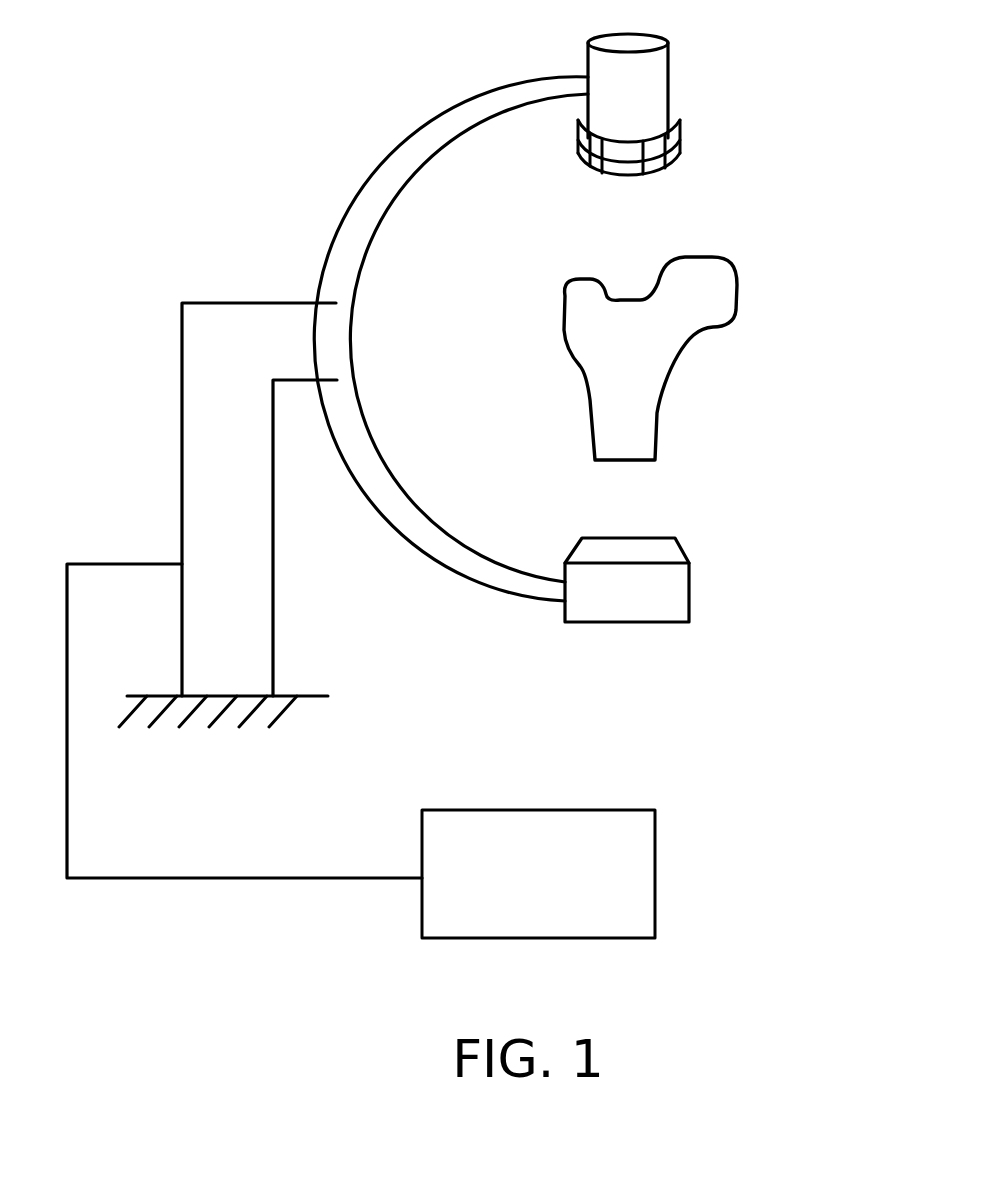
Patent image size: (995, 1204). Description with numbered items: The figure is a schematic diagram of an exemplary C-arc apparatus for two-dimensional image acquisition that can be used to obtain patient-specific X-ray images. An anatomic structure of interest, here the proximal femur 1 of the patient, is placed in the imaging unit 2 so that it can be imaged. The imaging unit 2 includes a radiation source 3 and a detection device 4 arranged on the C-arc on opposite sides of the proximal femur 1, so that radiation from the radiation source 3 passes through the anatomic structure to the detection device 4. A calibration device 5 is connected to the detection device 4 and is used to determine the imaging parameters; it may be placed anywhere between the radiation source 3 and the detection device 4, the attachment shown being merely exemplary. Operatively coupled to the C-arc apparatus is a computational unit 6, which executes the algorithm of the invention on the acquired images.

The proximal femur 1 is at (658, 413).
The imaging unit 2 is at (235, 303).
The radiation source 3 is at (632, 622).
The detection device 4 is at (588, 58).
The calibration device 5 is at (683, 128).
The computational unit 6 is at (633, 810).